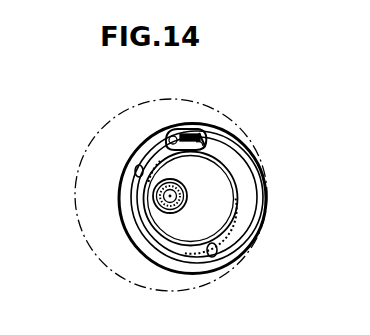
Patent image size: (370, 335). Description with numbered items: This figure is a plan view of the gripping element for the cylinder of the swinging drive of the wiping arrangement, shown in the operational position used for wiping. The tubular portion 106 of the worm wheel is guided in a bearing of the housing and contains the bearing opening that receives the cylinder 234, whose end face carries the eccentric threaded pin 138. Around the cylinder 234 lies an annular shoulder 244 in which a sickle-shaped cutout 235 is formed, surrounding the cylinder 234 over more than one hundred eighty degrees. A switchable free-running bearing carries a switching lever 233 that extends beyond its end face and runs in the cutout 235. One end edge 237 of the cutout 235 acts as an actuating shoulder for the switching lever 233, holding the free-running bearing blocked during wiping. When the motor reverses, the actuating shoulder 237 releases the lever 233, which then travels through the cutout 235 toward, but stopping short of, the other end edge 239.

The tubular portion 106 is at (100, 152).
The threaded pin 138 is at (178, 197).
The switching lever 233 is at (170, 130).
The cylinder 234 is at (213, 206).
The sickle-shaped cutout 235 is at (138, 170).
The end edge 237 is at (213, 142).
The other end edge 239 is at (212, 256).
The annular shoulder 244 is at (255, 168).